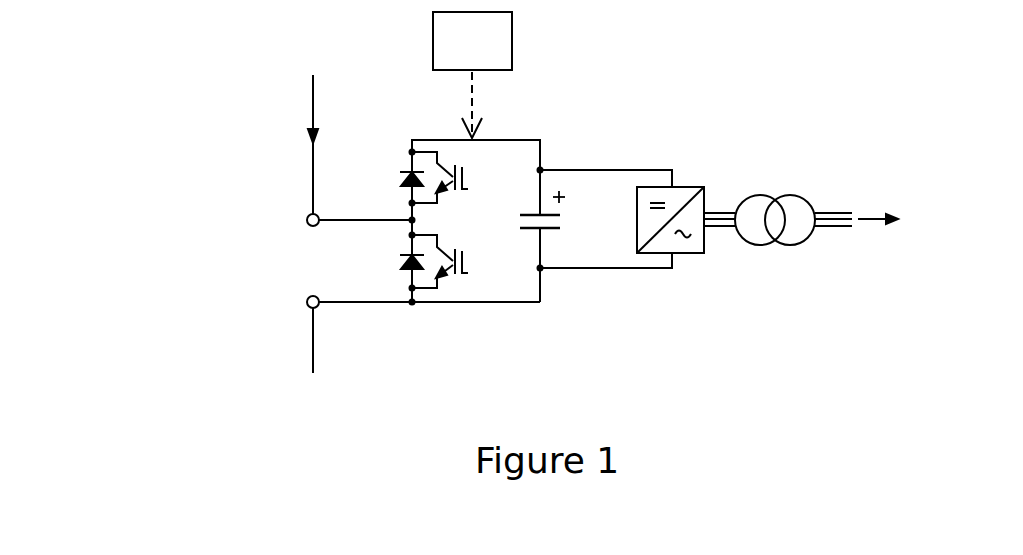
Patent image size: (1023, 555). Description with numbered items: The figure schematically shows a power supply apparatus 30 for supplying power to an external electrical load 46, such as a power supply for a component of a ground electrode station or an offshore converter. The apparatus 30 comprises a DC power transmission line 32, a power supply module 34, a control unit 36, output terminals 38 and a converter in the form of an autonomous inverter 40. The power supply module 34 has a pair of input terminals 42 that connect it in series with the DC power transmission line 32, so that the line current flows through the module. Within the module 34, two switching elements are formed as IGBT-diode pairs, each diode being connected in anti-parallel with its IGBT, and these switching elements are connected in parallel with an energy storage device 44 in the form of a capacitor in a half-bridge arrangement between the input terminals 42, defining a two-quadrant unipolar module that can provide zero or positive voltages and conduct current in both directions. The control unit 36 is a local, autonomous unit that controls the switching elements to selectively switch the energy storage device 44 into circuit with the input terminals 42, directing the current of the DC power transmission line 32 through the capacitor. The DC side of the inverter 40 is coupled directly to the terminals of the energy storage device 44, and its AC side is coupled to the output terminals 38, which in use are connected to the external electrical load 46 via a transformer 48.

The power supply apparatus 30 is at (394, 336).
The DC power transmission line 32 is at (280, 176).
The power supply module 34 is at (478, 285).
The control unit 36 is at (490, 53).
The output terminals 38 is at (705, 203).
The autonomous inverter 40 is at (678, 198).
The input terminals 42 is at (305, 232).
The energy storage device 44 is at (551, 232).
The external electrical load 46 is at (875, 225).
The transformer 48 is at (782, 218).